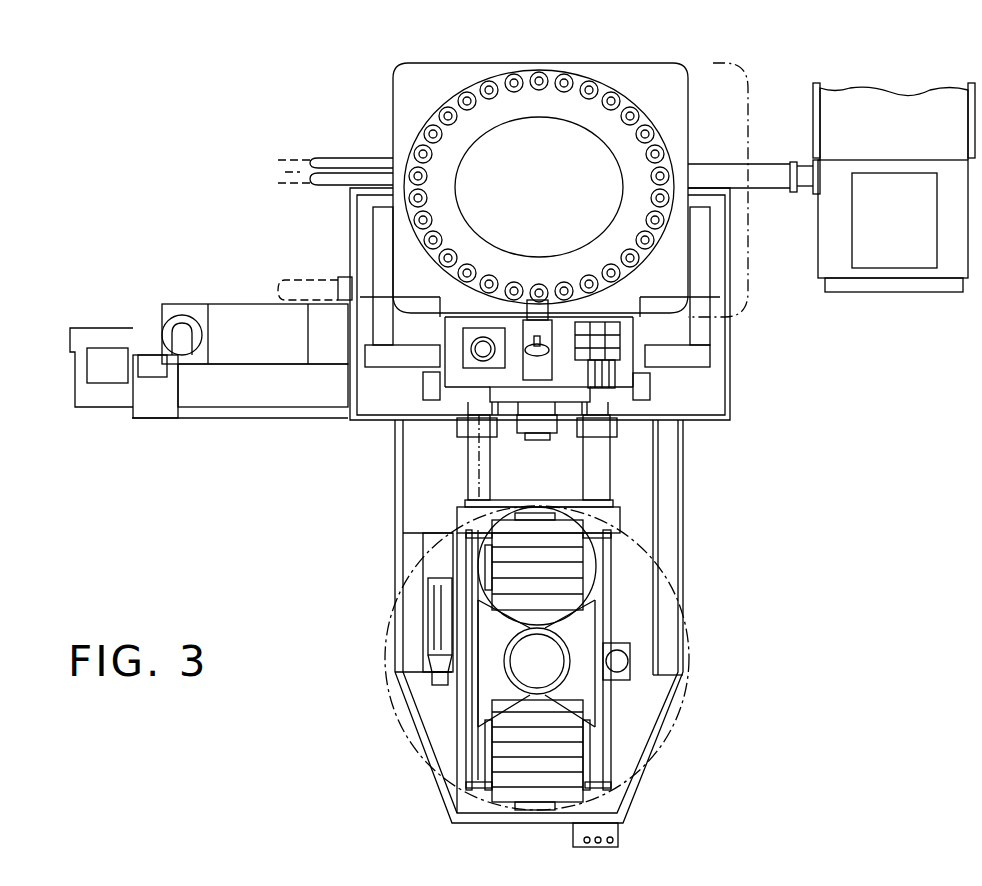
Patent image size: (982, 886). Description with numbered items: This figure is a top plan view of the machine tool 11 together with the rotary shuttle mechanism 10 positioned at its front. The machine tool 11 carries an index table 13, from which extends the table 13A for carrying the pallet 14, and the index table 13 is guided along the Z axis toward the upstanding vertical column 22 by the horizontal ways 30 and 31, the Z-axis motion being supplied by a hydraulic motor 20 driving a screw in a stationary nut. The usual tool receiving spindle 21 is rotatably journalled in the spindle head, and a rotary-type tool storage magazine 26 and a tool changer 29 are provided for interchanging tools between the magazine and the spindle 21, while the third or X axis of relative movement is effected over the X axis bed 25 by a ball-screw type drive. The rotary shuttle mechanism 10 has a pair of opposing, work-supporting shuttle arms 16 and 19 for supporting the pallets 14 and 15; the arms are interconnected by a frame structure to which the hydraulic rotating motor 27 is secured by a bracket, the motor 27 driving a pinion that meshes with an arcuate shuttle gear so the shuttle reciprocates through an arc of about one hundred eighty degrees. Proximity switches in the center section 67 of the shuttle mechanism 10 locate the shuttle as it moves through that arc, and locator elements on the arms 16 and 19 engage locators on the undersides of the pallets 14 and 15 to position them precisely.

The rotary shuttle mechanism 10 is at (496, 679).
The machine tool 11 is at (737, 381).
The index table 13 is at (622, 522).
The table 13A is at (615, 563).
The pallet 14 is at (503, 551).
The pallet 15 is at (492, 803).
The shuttle arm 16 is at (467, 718).
The shuttle arm 19 is at (472, 563).
The hydraulic motor 20 is at (435, 623).
The tool receiving spindle 21 is at (535, 427).
The vertical column 22 is at (566, 407).
The X axis bed 25 is at (287, 395).
The tool storage magazine 26 is at (425, 118).
The hydraulic rotating motor 27 is at (630, 661).
The tool changer 29 is at (540, 312).
The horizontal way 30 is at (477, 449).
The horizontal way 31 is at (598, 491).
The center section 67 is at (592, 634).